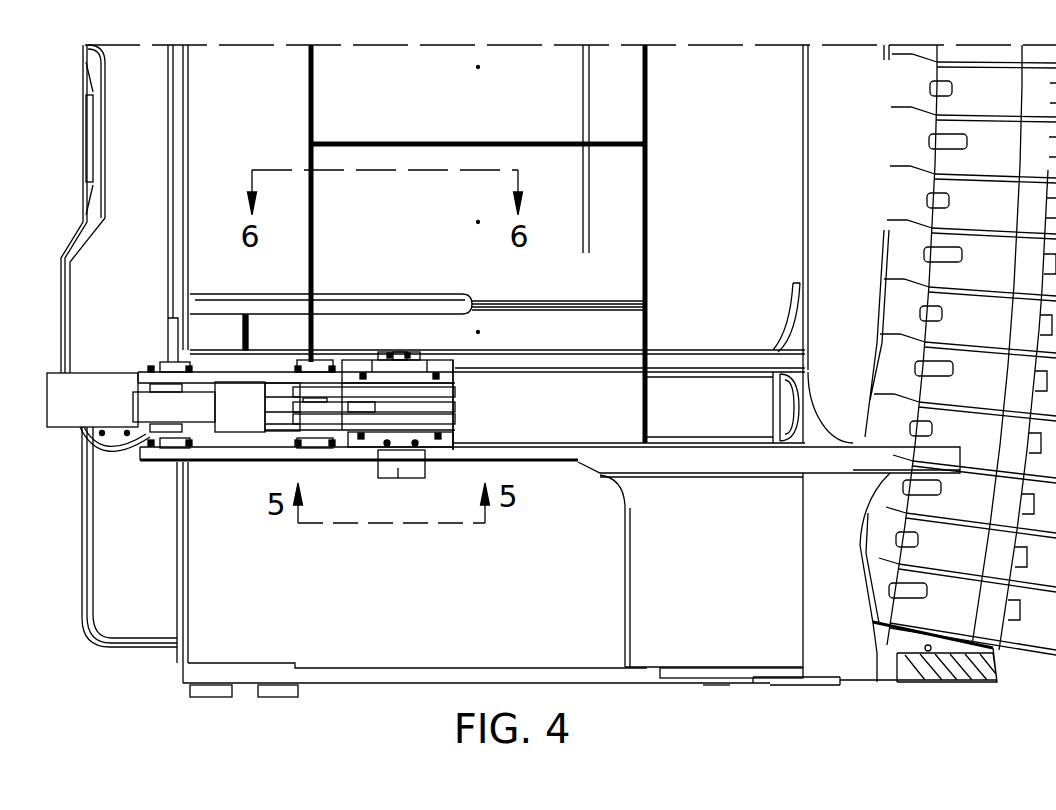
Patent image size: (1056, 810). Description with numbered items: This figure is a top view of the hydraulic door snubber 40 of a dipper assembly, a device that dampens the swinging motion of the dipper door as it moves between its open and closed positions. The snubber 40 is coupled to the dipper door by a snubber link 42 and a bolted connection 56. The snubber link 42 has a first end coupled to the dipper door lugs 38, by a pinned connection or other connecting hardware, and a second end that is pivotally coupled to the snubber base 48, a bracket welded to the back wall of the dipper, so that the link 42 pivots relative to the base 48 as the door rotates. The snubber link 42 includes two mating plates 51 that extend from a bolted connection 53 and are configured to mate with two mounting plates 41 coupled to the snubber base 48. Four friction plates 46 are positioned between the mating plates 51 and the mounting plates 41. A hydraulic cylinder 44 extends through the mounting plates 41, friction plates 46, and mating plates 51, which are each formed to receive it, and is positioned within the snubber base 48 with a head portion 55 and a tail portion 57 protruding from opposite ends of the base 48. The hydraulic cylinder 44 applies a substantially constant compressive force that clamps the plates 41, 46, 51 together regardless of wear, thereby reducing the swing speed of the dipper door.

The dipper door lugs 38 is at (60, 418).
The hydraulic door snubber 40 is at (508, 284).
The mounting plates 41 is at (453, 450).
The snubber link 42 is at (222, 445).
The hydraulic cylinder 44 is at (428, 486).
The friction plates 46 is at (462, 415).
The snubber base 48 is at (349, 450).
The mating plates 51 is at (342, 360).
The bolted connection 53 is at (312, 358).
The head portion 55 is at (398, 478).
The bolted connection 56 is at (164, 360).
The tail portion 57 is at (388, 352).